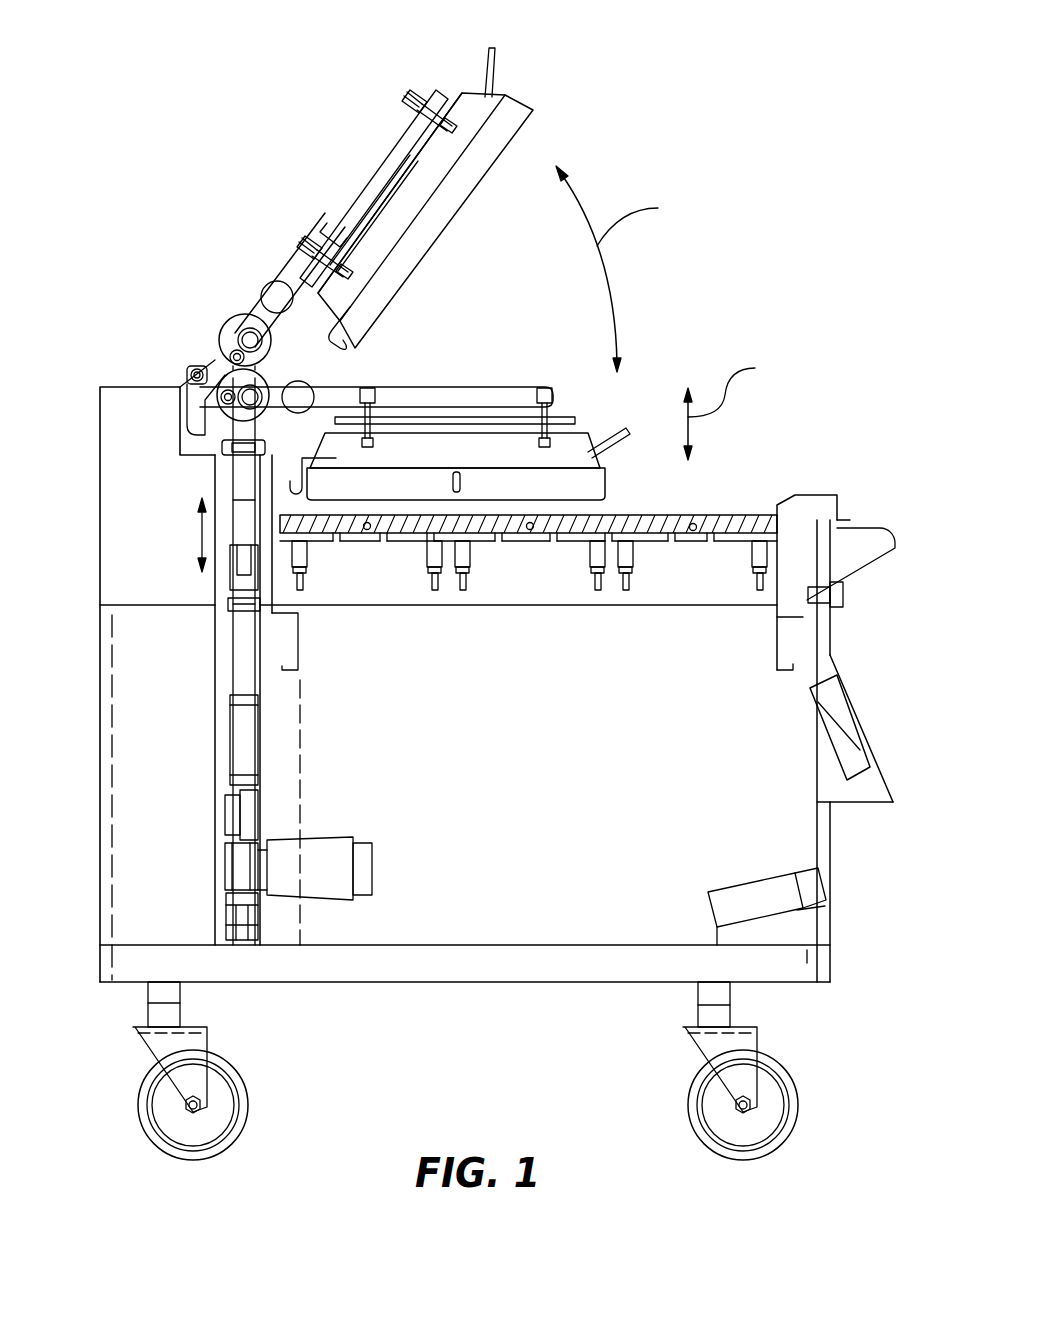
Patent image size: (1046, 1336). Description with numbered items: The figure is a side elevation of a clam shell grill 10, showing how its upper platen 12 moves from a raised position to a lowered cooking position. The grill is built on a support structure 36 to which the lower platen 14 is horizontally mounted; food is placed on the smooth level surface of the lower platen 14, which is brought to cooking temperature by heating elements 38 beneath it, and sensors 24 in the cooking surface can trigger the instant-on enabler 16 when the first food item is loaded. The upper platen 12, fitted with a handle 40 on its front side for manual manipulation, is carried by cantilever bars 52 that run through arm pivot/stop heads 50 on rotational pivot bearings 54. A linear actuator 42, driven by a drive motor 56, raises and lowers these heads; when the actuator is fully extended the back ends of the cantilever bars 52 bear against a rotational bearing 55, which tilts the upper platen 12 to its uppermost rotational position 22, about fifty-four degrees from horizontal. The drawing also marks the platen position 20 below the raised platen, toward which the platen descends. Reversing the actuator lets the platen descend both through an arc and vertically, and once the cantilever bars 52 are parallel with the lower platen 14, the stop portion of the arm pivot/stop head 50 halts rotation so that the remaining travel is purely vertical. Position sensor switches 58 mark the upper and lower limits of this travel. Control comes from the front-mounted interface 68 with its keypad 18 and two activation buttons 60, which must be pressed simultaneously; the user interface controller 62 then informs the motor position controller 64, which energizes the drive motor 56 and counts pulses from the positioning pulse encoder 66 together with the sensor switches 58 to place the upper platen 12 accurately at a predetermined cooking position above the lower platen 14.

The clam shell grill 10 is at (292, 124).
The upper platen 12 is at (550, 110).
The lower platen 14 is at (732, 517).
The instant-on enabler 16 is at (853, 757).
The keypad 18 is at (872, 752).
The platen carrier bar 20 is at (572, 398).
The uppermost rotational position 22 is at (450, 68).
The sensors 24 is at (367, 530).
The support structure 36 is at (128, 647).
The heating elements 38 is at (624, 572).
The handle 40 is at (492, 45).
The linear actuator 42 is at (240, 658).
The arm pivot/stop head 50 is at (246, 314).
The cantilever bars 52 is at (353, 193).
The rotational pivot bearings 54 is at (238, 342).
The rotational bearing 55 is at (198, 370).
The drive motor 56 is at (333, 836).
The position sensor switches 58 is at (224, 866).
The activation buttons 60 is at (843, 596).
The user interface controller 62 is at (840, 718).
The motor position controller 64 is at (723, 888).
The positioning pulse encoder 66 is at (372, 870).
The user-friendly interface 68 is at (846, 692).